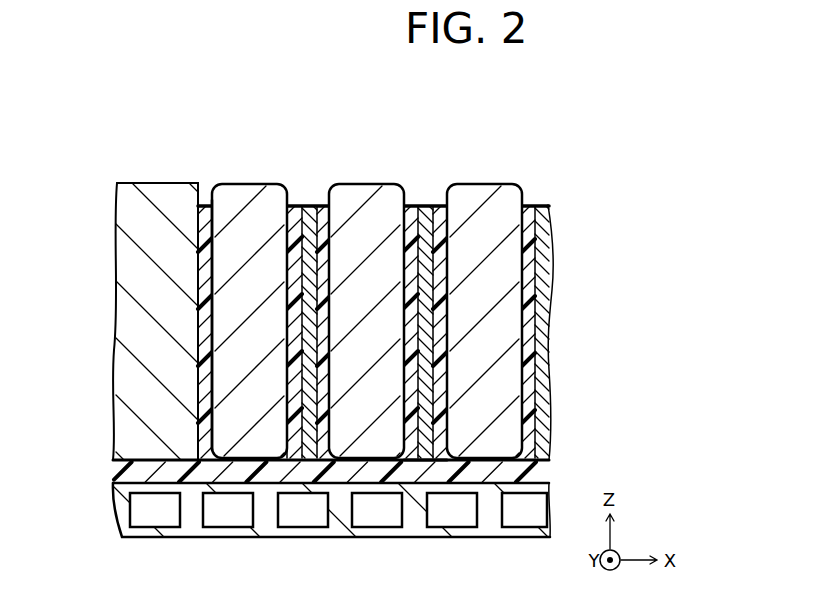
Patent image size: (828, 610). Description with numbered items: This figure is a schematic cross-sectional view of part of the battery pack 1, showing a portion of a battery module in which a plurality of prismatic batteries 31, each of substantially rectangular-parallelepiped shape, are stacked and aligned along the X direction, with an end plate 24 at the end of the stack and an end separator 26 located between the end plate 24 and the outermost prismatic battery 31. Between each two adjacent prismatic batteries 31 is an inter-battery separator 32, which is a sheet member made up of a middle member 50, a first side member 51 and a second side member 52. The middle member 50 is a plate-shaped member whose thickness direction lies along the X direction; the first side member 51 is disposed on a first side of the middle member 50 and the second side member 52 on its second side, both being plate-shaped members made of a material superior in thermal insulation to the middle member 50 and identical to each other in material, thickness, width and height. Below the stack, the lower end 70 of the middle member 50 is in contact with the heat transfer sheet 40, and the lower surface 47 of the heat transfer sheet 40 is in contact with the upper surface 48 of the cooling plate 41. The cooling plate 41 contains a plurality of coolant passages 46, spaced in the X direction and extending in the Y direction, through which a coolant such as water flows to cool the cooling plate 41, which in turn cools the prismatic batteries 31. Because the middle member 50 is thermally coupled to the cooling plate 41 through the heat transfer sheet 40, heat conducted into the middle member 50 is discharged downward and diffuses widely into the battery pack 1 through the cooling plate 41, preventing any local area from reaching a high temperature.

The battery pack 1 is at (396, 129).
The end plate 24 is at (148, 247).
The end separator 26 is at (213, 227).
The prismatic battery 31 is at (258, 193).
The inter-battery separator 32 is at (298, 192).
The heat transfer sheet 40 is at (538, 477).
The cooling plate 41 is at (488, 515).
The coolant passage 46 is at (230, 496).
The lower surface of heat transfer sheet 47 is at (332, 505).
The upper surface of cooling plate 48 is at (475, 482).
The middle member 50 is at (312, 227).
The first side member 51 is at (197, 241).
The second side member 52 is at (323, 267).
The lower end of middle member 70 is at (423, 462).